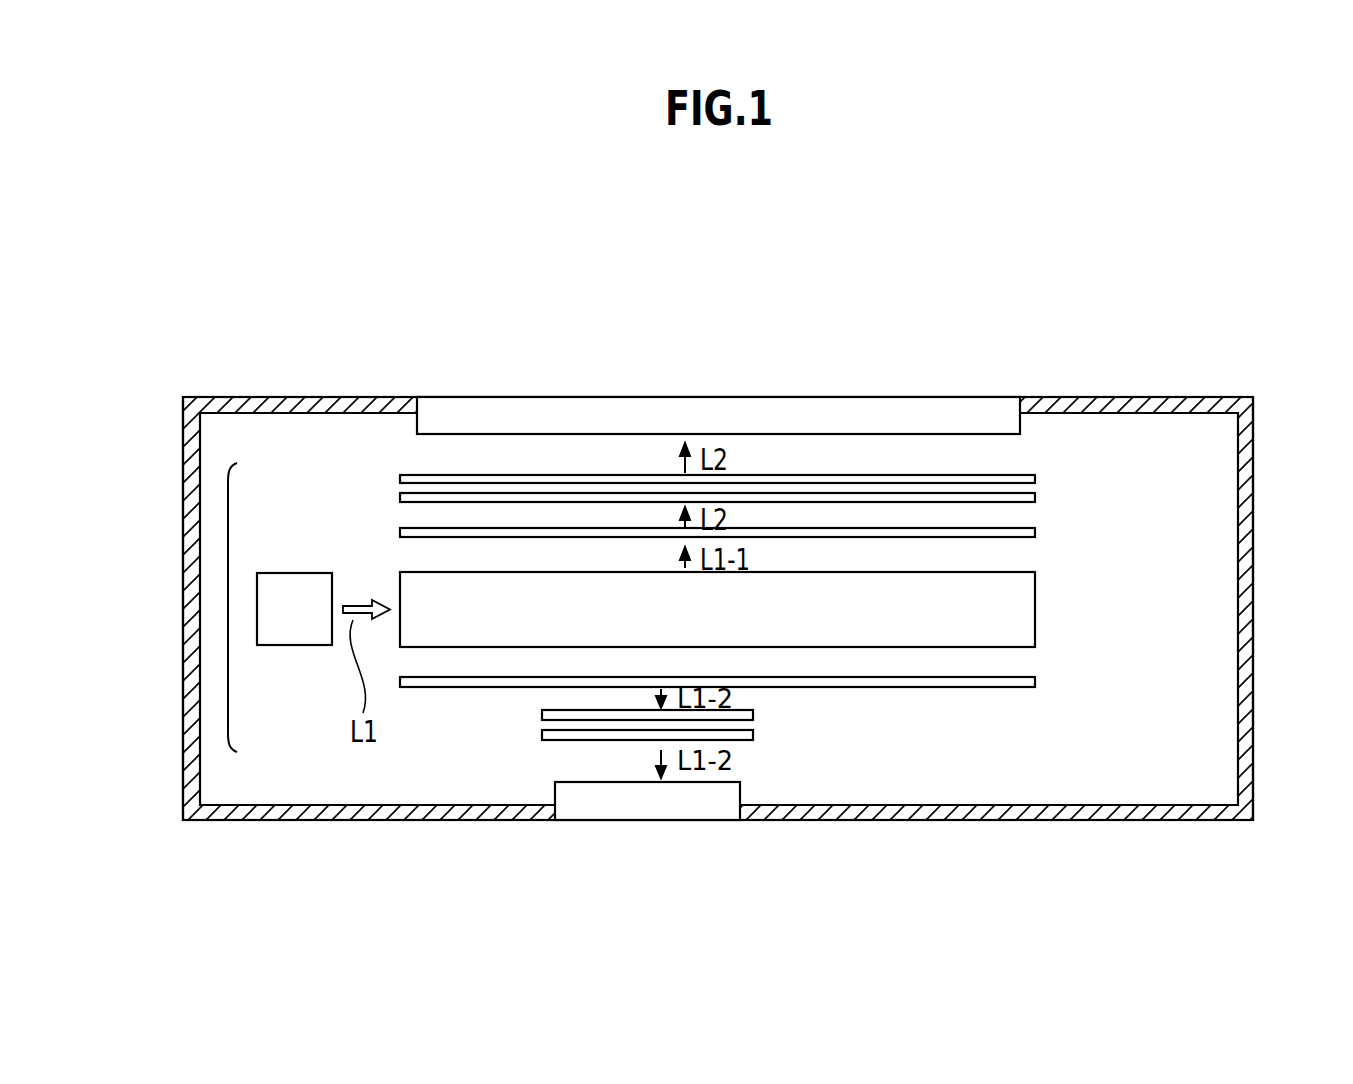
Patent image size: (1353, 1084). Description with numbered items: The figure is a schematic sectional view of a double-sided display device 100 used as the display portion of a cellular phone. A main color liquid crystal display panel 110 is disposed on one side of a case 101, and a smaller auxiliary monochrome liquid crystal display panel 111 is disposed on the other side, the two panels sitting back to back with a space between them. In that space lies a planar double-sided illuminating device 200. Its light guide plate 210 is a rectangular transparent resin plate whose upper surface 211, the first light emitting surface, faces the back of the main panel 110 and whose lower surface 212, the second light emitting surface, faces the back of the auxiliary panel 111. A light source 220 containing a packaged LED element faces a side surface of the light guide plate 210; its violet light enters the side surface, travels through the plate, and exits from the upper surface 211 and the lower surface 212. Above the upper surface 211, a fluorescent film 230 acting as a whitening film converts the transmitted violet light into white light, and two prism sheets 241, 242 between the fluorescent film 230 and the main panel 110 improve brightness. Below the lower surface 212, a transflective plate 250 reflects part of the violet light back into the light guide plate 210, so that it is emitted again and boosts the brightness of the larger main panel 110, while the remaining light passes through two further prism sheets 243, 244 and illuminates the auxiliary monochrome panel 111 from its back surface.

The double-sided display device 100 is at (202, 380).
The case 101 is at (1168, 398).
The main color liquid crystal display panel 110 is at (733, 415).
The auxiliary monochrome liquid crystal display panel 111 is at (648, 808).
The double-sided illuminating device 200 is at (228, 593).
The light guide plate 210 is at (1037, 603).
The upper surface 211 is at (1035, 568).
The lower surface 212 is at (1033, 660).
The light source 220 is at (288, 632).
The fluorescent film 230 is at (1035, 533).
The prism sheet 241 is at (1035, 500).
The prism sheet 242 is at (1035, 481).
The prism sheet 243 is at (753, 714).
The prism sheet 244 is at (753, 735).
The transflective plate 250 is at (1035, 682).